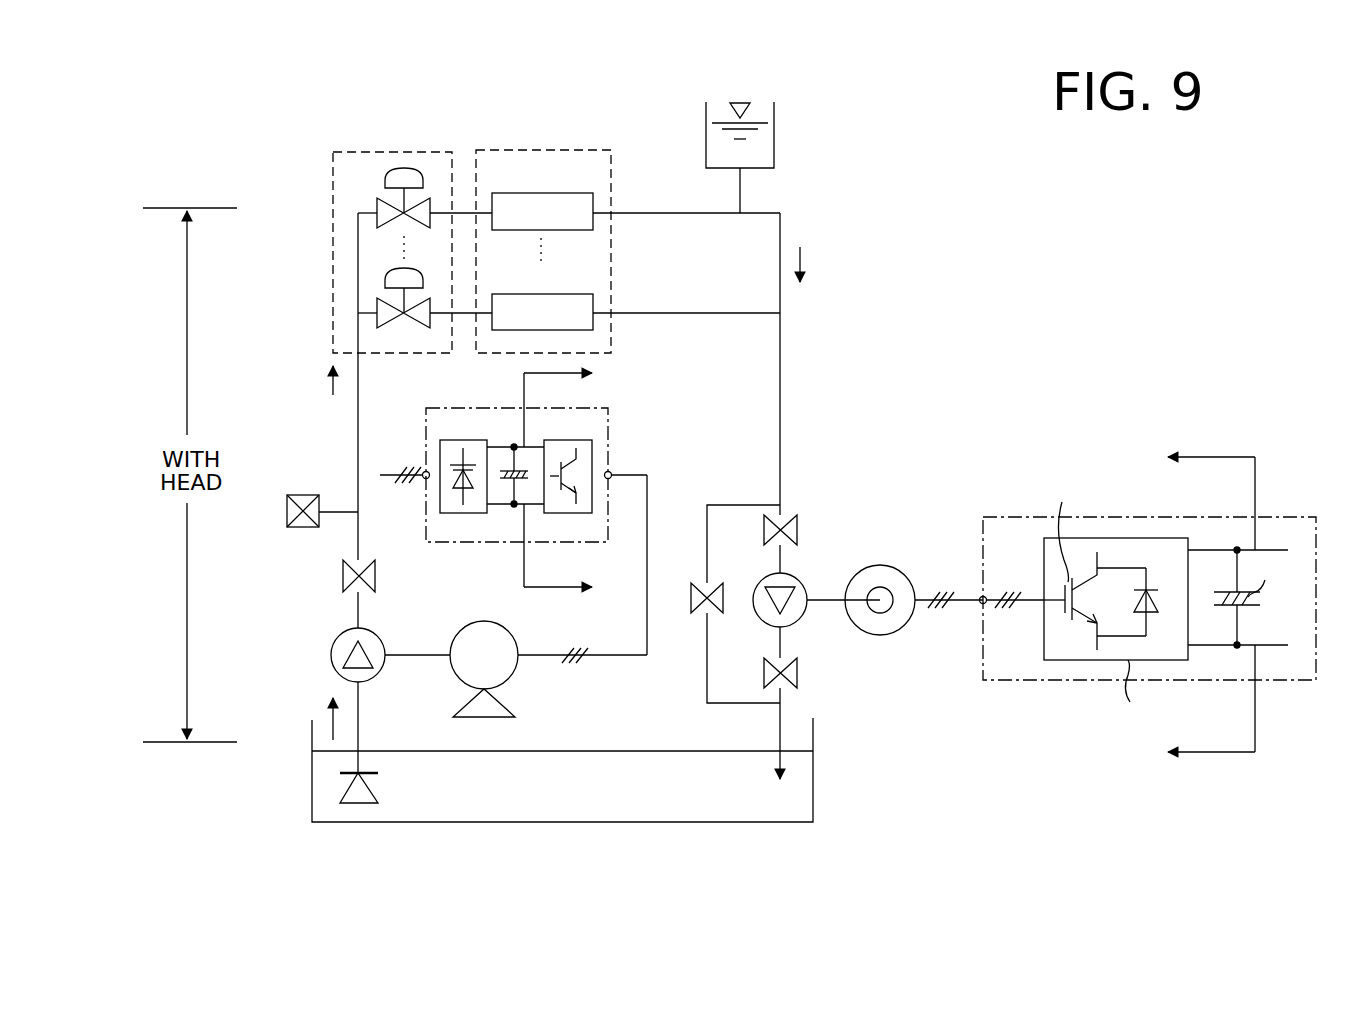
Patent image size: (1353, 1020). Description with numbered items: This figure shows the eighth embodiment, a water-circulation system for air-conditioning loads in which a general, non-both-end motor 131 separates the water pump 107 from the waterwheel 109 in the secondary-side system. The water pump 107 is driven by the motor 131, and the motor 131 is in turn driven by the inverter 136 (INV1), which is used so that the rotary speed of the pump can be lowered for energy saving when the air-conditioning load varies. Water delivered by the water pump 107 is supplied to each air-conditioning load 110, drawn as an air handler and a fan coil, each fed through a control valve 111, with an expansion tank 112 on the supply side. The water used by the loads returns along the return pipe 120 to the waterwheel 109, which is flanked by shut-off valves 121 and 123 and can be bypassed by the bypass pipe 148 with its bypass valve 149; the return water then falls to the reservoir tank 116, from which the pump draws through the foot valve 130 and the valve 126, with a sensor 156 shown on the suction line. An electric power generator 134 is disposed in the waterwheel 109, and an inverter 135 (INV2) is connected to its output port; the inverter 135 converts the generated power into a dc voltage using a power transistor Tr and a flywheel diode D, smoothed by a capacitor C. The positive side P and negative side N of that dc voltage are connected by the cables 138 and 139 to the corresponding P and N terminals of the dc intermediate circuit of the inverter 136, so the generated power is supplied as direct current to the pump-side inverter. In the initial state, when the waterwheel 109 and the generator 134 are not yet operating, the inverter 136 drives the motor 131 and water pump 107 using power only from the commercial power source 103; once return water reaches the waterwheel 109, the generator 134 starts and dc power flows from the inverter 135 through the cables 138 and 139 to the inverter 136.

The commercial power source 103 is at (383, 474).
The water pump 107 is at (336, 642).
The waterwheel 109 is at (803, 615).
The air-conditioning load 110 is at (611, 267).
The control valves 111 is at (333, 265).
The expansion tank 112 is at (774, 148).
The reservoir tank 116 is at (467, 822).
The return pipe 120 is at (780, 338).
The valve 121 is at (795, 535).
The valve 123 is at (797, 675).
The valve 126 is at (375, 575).
The foot valve 130 is at (378, 787).
The motor 131 is at (513, 678).
The electric power generator 134 is at (880, 566).
The inverter 135 is at (1015, 680).
The inverter 136 is at (608, 437).
The cable 138 is at (524, 380).
The cable 139 is at (553, 589).
The bypass pipe 148 is at (707, 703).
The bypass valve 149 is at (697, 615).
The sensor 156 is at (302, 494).